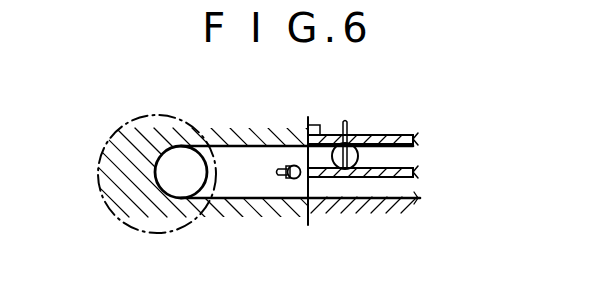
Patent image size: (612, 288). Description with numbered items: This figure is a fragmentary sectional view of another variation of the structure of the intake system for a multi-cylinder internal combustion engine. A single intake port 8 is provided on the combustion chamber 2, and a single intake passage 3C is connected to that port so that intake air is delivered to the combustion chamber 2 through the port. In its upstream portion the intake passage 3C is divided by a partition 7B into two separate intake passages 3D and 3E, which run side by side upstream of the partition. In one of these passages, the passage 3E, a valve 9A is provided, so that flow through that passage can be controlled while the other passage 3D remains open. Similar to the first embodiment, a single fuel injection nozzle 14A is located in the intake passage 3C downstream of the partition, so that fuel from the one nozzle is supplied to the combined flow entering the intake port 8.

The combustion chamber 2 is at (124, 229).
The intake port 8 is at (186, 167).
The fuel injection nozzle 14A is at (291, 164).
The valve 9A is at (361, 140).
The intake passage 3E is at (388, 157).
The partition 7B is at (398, 167).
The intake passage 3C is at (250, 178).
The intake passage 3D is at (404, 197).